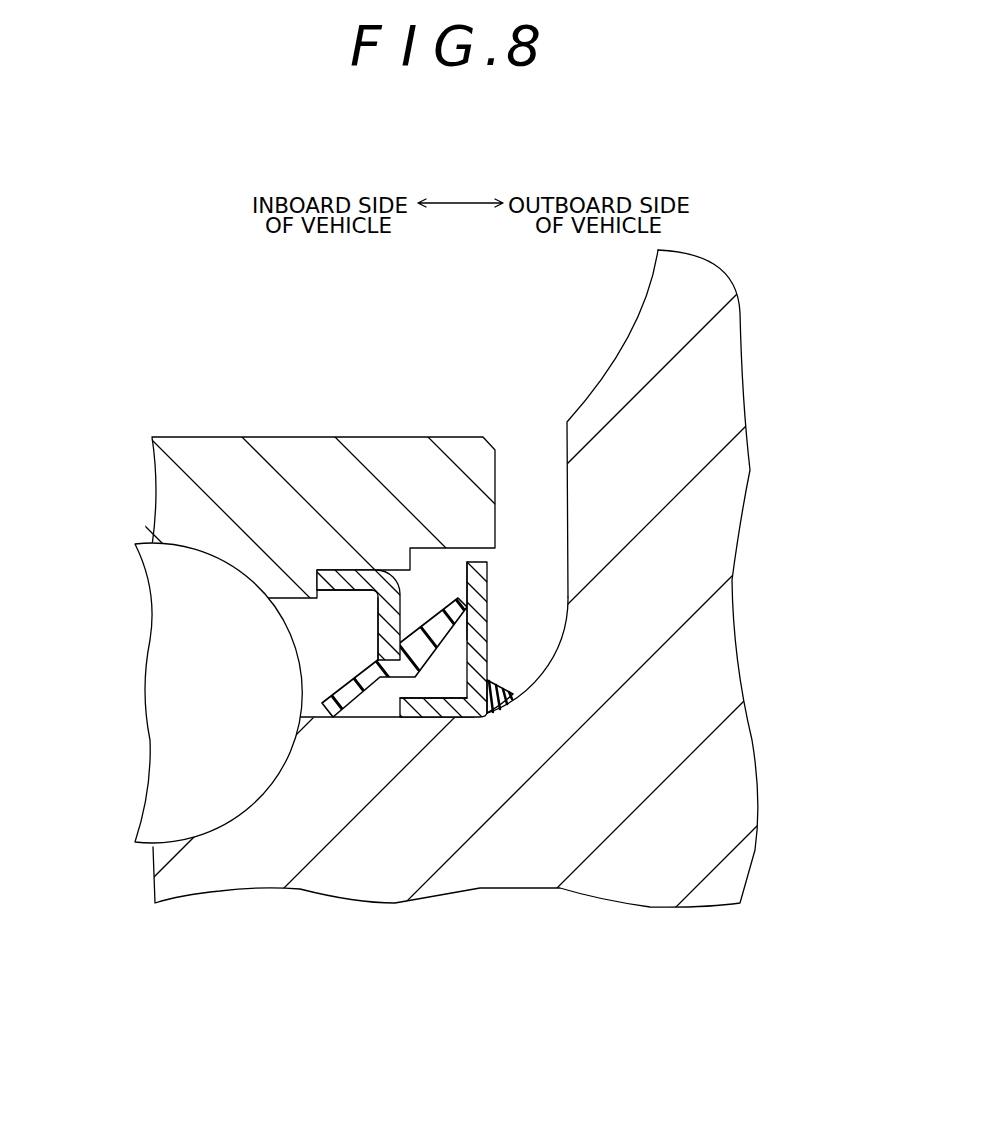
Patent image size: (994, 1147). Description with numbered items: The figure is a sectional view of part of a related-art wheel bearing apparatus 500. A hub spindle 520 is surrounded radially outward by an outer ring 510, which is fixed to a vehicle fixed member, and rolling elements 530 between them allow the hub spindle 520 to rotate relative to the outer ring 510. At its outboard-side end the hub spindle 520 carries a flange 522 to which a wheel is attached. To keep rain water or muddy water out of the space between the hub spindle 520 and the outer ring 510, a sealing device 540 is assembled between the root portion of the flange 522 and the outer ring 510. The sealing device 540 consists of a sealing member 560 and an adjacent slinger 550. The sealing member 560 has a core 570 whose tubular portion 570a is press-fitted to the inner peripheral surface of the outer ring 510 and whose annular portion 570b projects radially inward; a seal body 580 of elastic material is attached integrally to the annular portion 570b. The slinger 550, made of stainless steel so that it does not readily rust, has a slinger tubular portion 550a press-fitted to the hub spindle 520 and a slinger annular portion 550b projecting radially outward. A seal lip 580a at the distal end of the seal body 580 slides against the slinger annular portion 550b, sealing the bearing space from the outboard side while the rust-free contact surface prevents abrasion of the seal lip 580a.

The wheel bearing apparatus 500 is at (210, 333).
The outer ring 510 is at (312, 467).
The hub spindle 520 is at (523, 848).
The flange 522 is at (722, 511).
The rolling elements 530 is at (200, 744).
The sealing device 540 is at (514, 591).
The slinger 550 is at (480, 653).
The slinger tubular portion 550a is at (427, 708).
The slinger annular portion 550b is at (479, 623).
The sealing member 560 is at (497, 320).
The core 570 is at (381, 592).
The tubular portion 570a is at (357, 583).
The annular portion 570b is at (388, 628).
The seal body 580 is at (415, 629).
The seal lip 580a is at (452, 698).